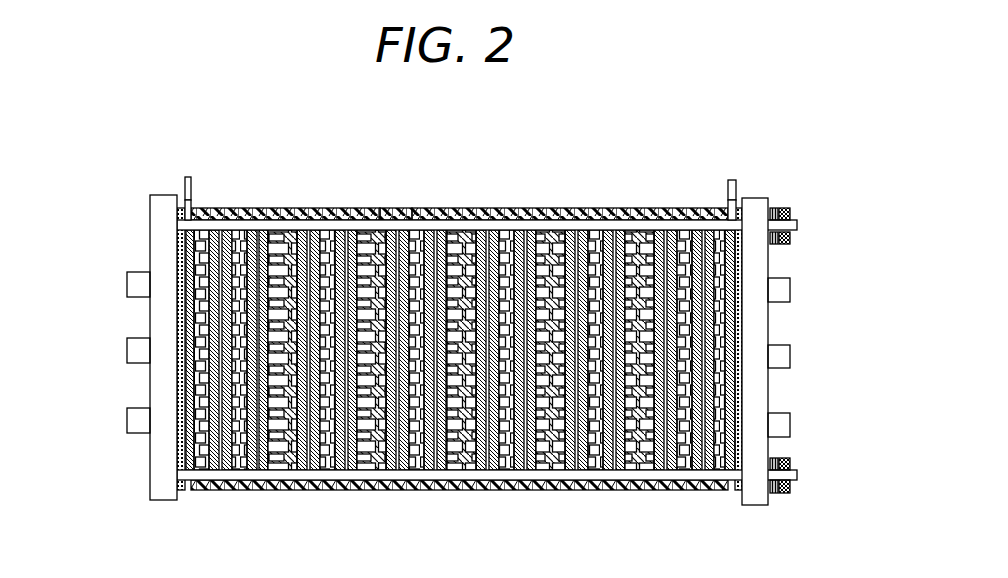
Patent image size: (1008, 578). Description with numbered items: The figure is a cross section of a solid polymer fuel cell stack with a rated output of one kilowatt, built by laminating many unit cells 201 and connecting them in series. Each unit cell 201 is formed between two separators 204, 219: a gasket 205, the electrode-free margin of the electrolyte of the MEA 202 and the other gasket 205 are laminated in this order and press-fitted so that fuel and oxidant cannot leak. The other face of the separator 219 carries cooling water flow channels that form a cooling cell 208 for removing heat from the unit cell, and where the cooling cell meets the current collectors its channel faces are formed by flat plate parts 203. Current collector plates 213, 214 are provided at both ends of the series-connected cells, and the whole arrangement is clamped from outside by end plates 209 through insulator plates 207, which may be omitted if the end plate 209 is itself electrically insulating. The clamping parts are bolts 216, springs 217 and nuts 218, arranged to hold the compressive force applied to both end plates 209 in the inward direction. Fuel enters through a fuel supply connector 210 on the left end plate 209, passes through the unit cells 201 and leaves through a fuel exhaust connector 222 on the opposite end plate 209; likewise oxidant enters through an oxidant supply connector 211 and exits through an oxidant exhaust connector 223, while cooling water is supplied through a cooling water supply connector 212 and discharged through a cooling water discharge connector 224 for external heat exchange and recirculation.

The unit cell 201 is at (518, 310).
The membrane-electrode assembly (MEA) 202 is at (499, 236).
The flat plate part 203 is at (192, 208).
The separator 204 is at (422, 208).
The gasket 205 is at (406, 208).
The insulator plate 207 is at (178, 243).
The cooling cell 208 is at (487, 304).
The end plate 209 is at (162, 480).
The fuel supply connector 210 is at (128, 283).
The oxidant supply connector 211 is at (128, 420).
The cooling water supply connector 212 is at (128, 350).
The current collector plate 213 is at (183, 182).
The current collector plate 214 is at (736, 182).
The bolt 216 is at (797, 226).
The spring 217 is at (776, 208).
The nut 218 is at (790, 242).
The separator having cooling water flow channels 219 is at (370, 208).
The fuel exhaust connector 222 is at (790, 430).
The oxidant exhaust connector 223 is at (790, 288).
The cooling water discharge connector 224 is at (790, 352).